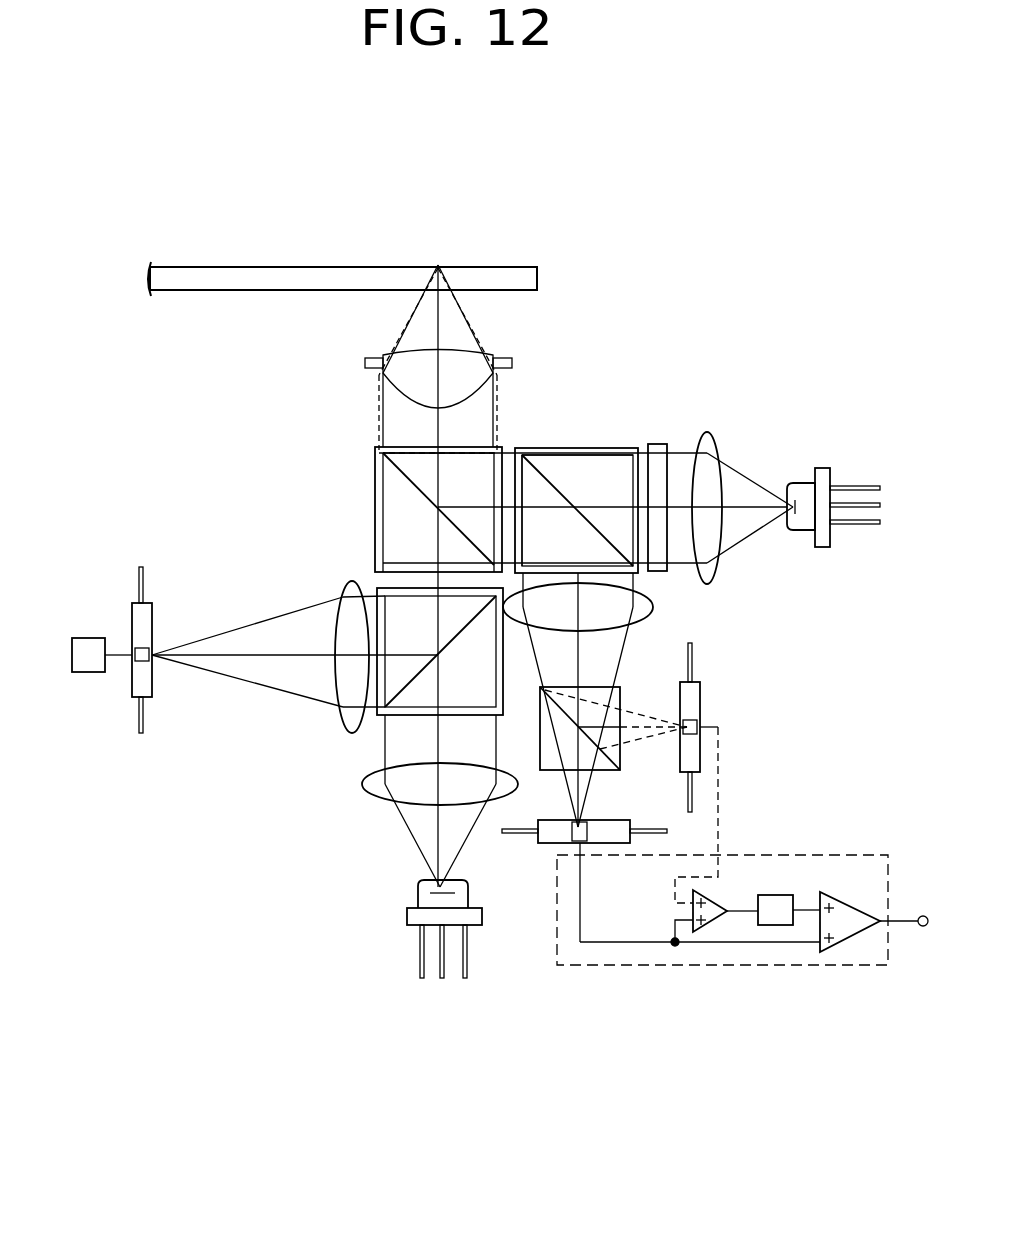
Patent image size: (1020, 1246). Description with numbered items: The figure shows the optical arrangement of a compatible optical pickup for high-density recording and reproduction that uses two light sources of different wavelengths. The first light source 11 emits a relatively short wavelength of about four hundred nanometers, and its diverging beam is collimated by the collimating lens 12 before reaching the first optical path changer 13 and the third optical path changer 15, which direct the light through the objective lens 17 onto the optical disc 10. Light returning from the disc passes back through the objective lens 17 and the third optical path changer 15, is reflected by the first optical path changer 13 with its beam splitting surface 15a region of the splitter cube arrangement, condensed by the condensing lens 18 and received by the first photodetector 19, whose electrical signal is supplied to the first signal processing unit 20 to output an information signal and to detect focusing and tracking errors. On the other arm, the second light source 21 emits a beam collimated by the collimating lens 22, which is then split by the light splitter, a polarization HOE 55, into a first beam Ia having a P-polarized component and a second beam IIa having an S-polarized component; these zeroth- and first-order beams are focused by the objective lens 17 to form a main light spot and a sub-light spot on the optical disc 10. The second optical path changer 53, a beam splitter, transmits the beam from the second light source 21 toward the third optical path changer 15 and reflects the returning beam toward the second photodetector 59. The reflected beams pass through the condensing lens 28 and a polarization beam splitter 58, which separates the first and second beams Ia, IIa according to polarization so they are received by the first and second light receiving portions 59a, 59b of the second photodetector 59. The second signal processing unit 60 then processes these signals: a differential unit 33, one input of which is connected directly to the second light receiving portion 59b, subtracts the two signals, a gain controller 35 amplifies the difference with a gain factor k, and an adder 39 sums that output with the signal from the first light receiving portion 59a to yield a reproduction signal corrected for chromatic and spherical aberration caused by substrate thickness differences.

The optical disc 10 is at (340, 290).
The first light source 11 is at (407, 913).
The collimating lens 12 is at (368, 787).
The first optical path changer 13 is at (390, 710).
The third optical path changer 15 is at (375, 527).
The beam splitting surface 15a is at (397, 467).
The objective lens 17 is at (365, 364).
The condensing lens 18 is at (347, 728).
The first photodetector 19 is at (150, 613).
The first signal processing unit 20 is at (80, 637).
The second light source 21 is at (823, 468).
The collimating lens 22 is at (707, 432).
The condensing lens 28 is at (653, 610).
The differential unit 33 is at (717, 922).
The gain controller 35 is at (780, 925).
The adder 39 is at (860, 935).
The second optical path changer 53 is at (625, 447).
The polarization HOE 55 is at (658, 444).
The polarization beam splitter 58 is at (622, 698).
The second photodetector 59 is at (712, 797).
The first light receiving portion 59a is at (608, 820).
The second light receiving portion 59b is at (700, 698).
The second signal processing unit 60 is at (652, 965).
The first beam Ia is at (557, 452).
The second beam IIa is at (533, 447).